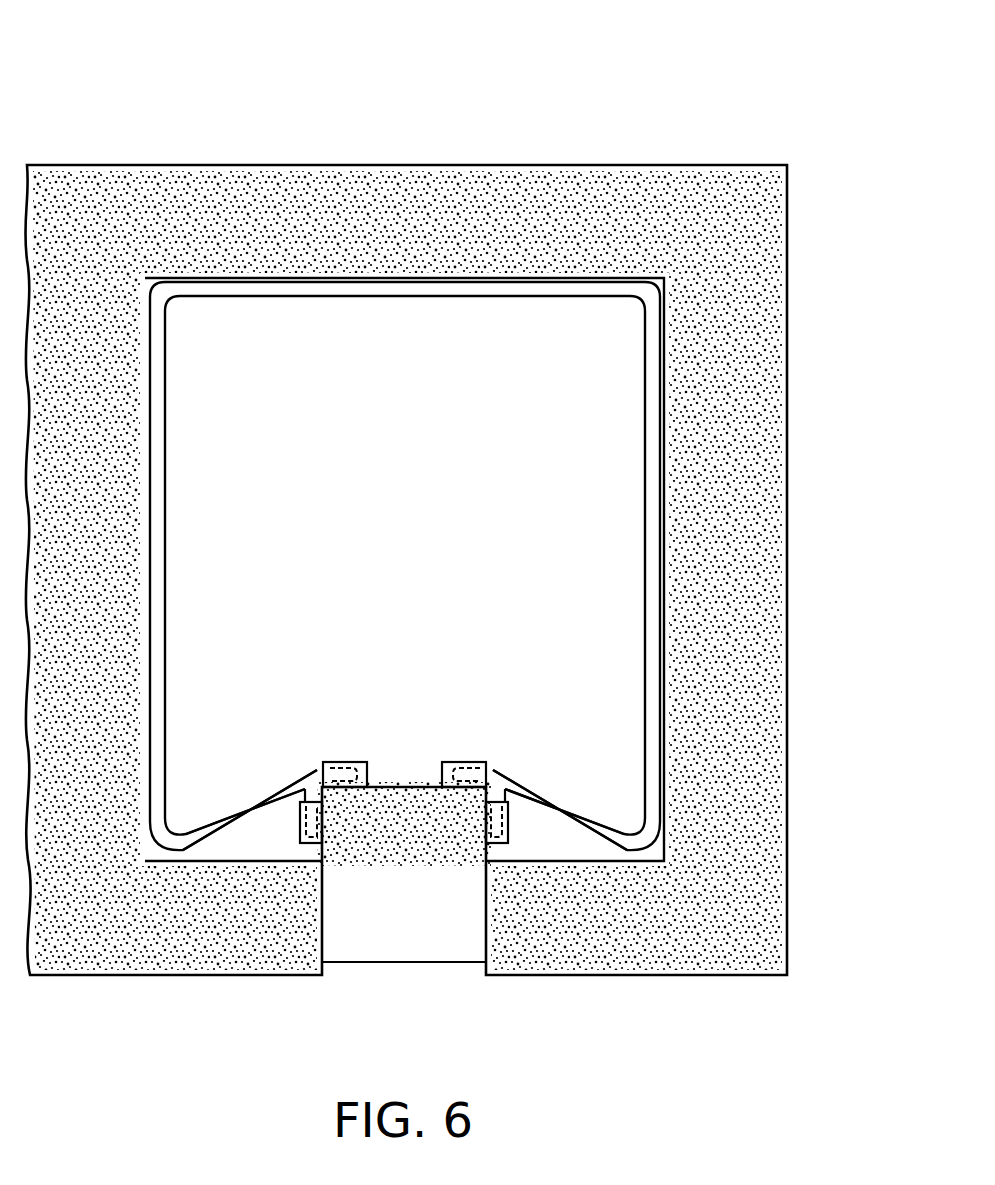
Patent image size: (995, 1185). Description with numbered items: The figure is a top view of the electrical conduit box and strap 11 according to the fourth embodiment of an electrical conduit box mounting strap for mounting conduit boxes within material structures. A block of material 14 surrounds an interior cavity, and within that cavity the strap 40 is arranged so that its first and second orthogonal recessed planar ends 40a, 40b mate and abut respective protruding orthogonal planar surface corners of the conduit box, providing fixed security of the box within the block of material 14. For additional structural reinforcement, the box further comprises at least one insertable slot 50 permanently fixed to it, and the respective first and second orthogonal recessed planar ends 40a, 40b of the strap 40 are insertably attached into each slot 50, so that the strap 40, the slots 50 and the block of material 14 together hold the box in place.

The electrical conduit box and strap 11 is at (181, 108).
The block of material 14 is at (783, 202).
The strap 40 is at (643, 483).
The first orthogonal recessed planar end 40a is at (320, 768).
The second orthogonal recessed planar end 40b is at (496, 768).
The insertable slot 50 is at (442, 760).